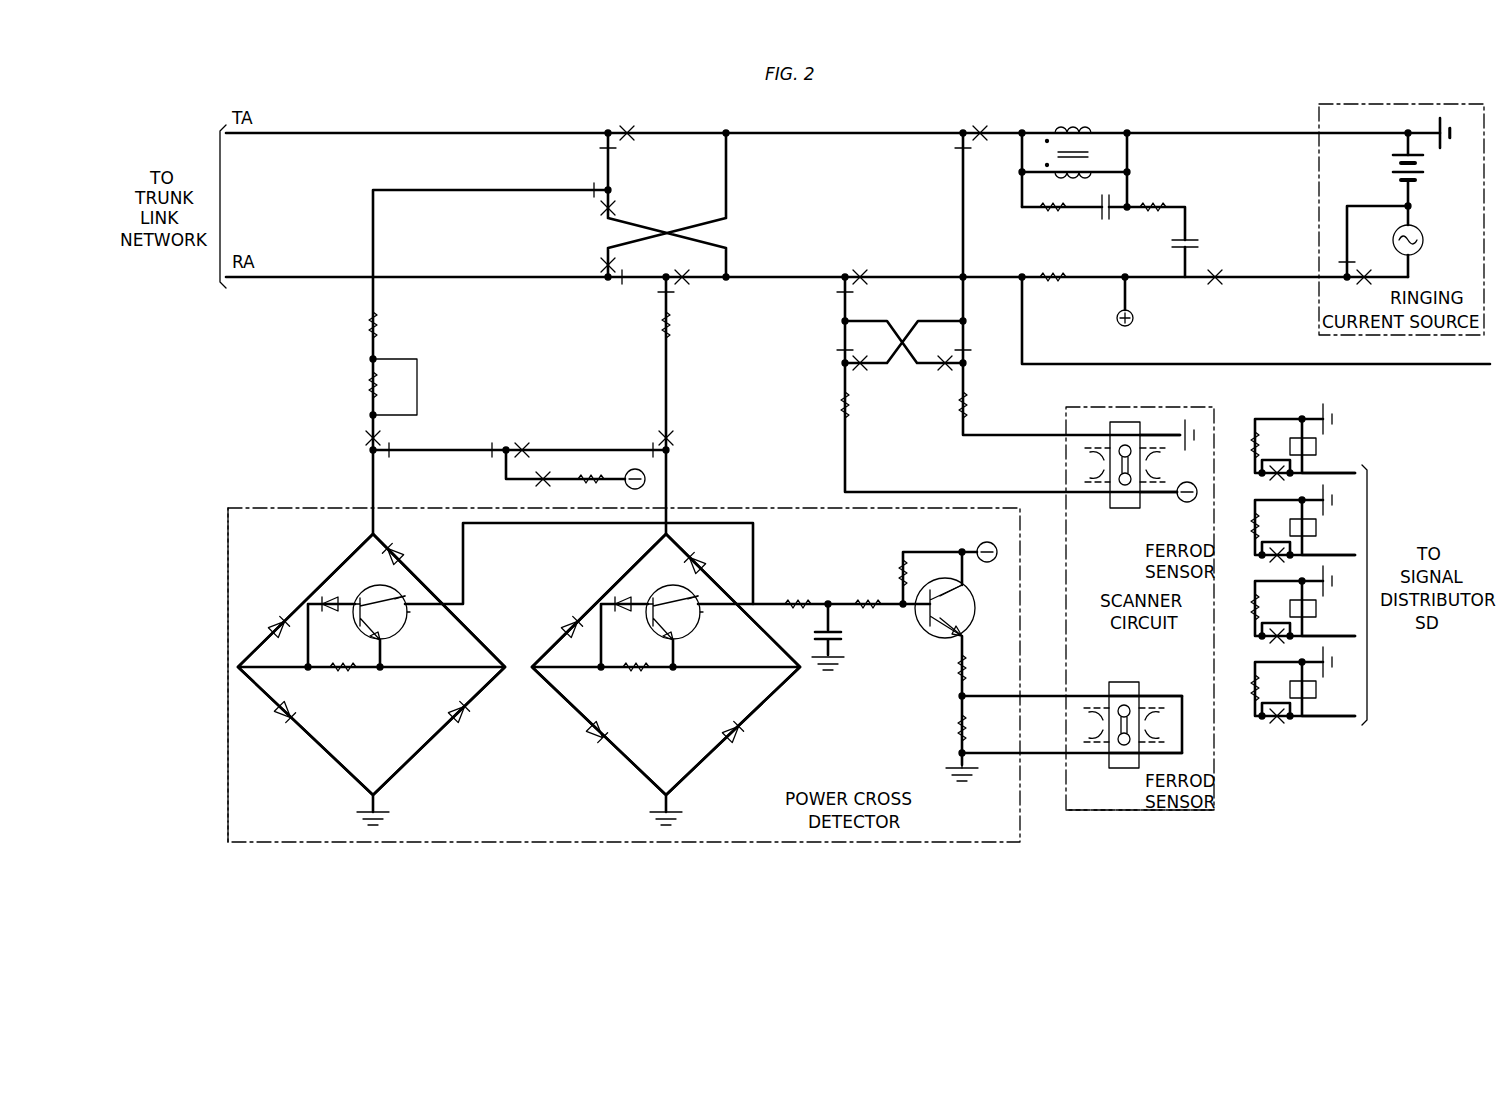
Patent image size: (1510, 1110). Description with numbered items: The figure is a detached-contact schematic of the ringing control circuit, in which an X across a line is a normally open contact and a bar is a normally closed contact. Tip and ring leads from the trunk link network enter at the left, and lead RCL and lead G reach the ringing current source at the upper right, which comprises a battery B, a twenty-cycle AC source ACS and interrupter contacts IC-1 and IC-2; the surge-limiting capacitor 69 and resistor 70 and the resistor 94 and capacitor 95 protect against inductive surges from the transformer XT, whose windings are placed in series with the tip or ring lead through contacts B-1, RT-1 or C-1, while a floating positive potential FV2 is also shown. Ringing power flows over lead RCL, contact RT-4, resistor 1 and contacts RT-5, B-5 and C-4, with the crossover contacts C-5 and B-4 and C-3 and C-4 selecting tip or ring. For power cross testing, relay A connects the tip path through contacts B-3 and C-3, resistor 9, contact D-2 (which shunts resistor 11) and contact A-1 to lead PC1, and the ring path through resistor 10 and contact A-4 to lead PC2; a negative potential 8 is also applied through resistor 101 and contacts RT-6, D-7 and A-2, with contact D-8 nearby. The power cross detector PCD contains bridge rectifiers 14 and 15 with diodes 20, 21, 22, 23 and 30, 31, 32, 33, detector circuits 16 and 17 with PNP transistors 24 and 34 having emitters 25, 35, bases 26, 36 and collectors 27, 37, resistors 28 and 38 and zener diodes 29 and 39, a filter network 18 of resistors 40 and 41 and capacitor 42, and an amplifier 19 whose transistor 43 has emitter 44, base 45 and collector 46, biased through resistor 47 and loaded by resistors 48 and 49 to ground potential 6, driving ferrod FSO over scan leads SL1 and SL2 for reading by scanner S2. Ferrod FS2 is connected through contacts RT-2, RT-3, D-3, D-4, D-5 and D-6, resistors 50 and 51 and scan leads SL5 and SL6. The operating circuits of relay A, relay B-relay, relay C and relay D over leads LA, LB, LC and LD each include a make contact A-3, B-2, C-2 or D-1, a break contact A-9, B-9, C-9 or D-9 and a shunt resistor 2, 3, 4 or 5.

The contact B-1 of relay B B-1 is at (627, 126).
The contact B-3 of relay B B-3 is at (599, 148).
The contact C-3 of relay C C-3 is at (592, 196).
The contact C-5 of relay C C-5 is at (616, 208).
The contact C-1 of relay C C-1 is at (600, 265).
The contact C-4 of relay C C-4 is at (622, 282).
The contact B-5 of relay B B-5 is at (680, 270).
The contact B-4 of relay B B-4 is at (676, 294).
The contact RT-1 of ring trip relay RT RT-1 is at (980, 126).
The contact RT-3 of ring trip relay RT RT-3 is at (955, 148).
The contact RT-5 of ring trip relay RT RT-5 is at (860, 270).
The contact RT-2 of ring trip relay RT RT-2 is at (838, 292).
The contact RT-4 of ring trip relay RT RT-4 is at (1214, 288).
The contact RT-6 of ring trip relay RT RT-6 is at (543, 482).
The contact D-3 of relay D D-3 is at (837, 350).
The contact D-4 of relay D D-4 is at (970, 347).
The contact D-5 of relay D D-5 is at (862, 372).
The contact D-6 of relay D D-6 is at (942, 372).
The contact D-7 of relay D D-7 is at (490, 458).
The contact D-8 of relay D D-8 is at (523, 440).
The contact D-2 of relay D D-2 is at (417, 387).
The contact D-1 of relay D D-1 is at (1277, 723).
The contact D-9 of relay D D-9 is at (1277, 703).
The contact A-1 of relay A A-1 is at (366, 438).
The contact A-2 of relay A A-2 is at (392, 458).
The contact A-3 of relay A A-3 is at (650, 445).
The contact A-4 of relay A A-4 is at (676, 440).
The contact A-9 of relay A A-9 is at (1277, 460).
The contact B-2 of relay B B-2 is at (1272, 557).
The contact B-9 of relay B B-9 is at (1277, 542).
The contact C-2 of relay C C-2 is at (1272, 638).
The contact C-9 of relay C C-9 is at (1277, 623).
The interrupter contact IC-1 is at (1354, 264).
The interrupter contact IC-2 is at (1364, 282).
The resistor 9 is at (378, 324).
The resistor 10 is at (662, 329).
The resistor 11 is at (368, 384).
The resistor 101 is at (594, 491).
The negative potential 8 is at (626, 473).
The resistor 50 is at (841, 405).
The resistor 51 is at (968, 404).
The resistor 1 is at (1062, 270).
The resistor 94 is at (1044, 214).
The capacitor 95 is at (1108, 222).
The resistor 70 is at (1152, 202).
The capacitor 69 is at (1195, 242).
The transformer XT is at (1069, 137).
The floating positive potential FV2 is at (1117, 320).
The 20-cycle AC source ACS is at (1421, 238).
The battery B is at (1396, 161).
The lead G is at (1375, 129).
The lead RCL is at (1290, 265).
The lead PC1 is at (372, 482).
The lead PC2 is at (668, 482).
The power cross detector PCD is at (227, 538).
The scan lead SL6 is at (1104, 424).
The scan lead SL5 is at (1102, 481).
The scan lead SL1 is at (1105, 685).
The scan lead SL2 is at (1105, 742).
The ground potential 6 is at (1191, 436).
The ferrod sensor FS2 is at (1115, 508).
The ferrod sensor FSO is at (1113, 683).
The scanner S2 is at (1214, 768).
The resistor 2 is at (1252, 444).
The resistor 3 is at (1252, 526).
The resistor 4 is at (1252, 607).
The resistor 5 is at (1252, 688).
The magnetic latching relay A is at (1316, 446).
The magnetic latching relay B B-relay is at (1316, 527).
The magnetic latching relay C is at (1316, 608).
The magnetic latching relay D is at (1316, 689).
The lead LA is at (1328, 462).
The lead LB is at (1328, 544).
The lead LC is at (1328, 625).
The lead LD is at (1329, 705).
The full wave bridge rectifier 14 is at (371, 664).
The full wave bridge rectifier 15 is at (666, 664).
The detector transistor circuit 16 is at (380, 603).
The detector transistor circuit 17 is at (673, 603).
The resistor-capacitor filter network 18 is at (828, 626).
The transistor amplifier 19 is at (933, 647).
The diode 20 is at (272, 622).
The diode 21 is at (400, 554).
The diode 22 is at (293, 717).
The diode 23 is at (452, 710).
The PNP transistor 24 is at (408, 632).
The emitter 25 is at (360, 622).
The base 26 is at (382, 648).
The collector 27 is at (408, 616).
The resistor 28 is at (344, 672).
The zener diode 29 is at (337, 595).
The diode 30 is at (570, 618).
The diode 31 is at (700, 562).
The diode 32 is at (602, 725).
The diode 33 is at (732, 724).
The PNP transistor 34 is at (700, 632).
The emitter 35 is at (658, 622).
The base 36 is at (674, 648).
The collector 37 is at (700, 616).
The resistor 38 is at (638, 672).
The zener diode 39 is at (630, 595).
The resistor 40 is at (798, 600).
The resistor 41 is at (862, 600).
The capacitor 42 is at (842, 638).
The transistor 43 is at (976, 602).
The emitter 44 is at (942, 598).
The base 45 is at (926, 620).
The collector 46 is at (952, 650).
The resistor 47 is at (898, 574).
The resistor 48 is at (970, 670).
The resistor 49 is at (956, 730).